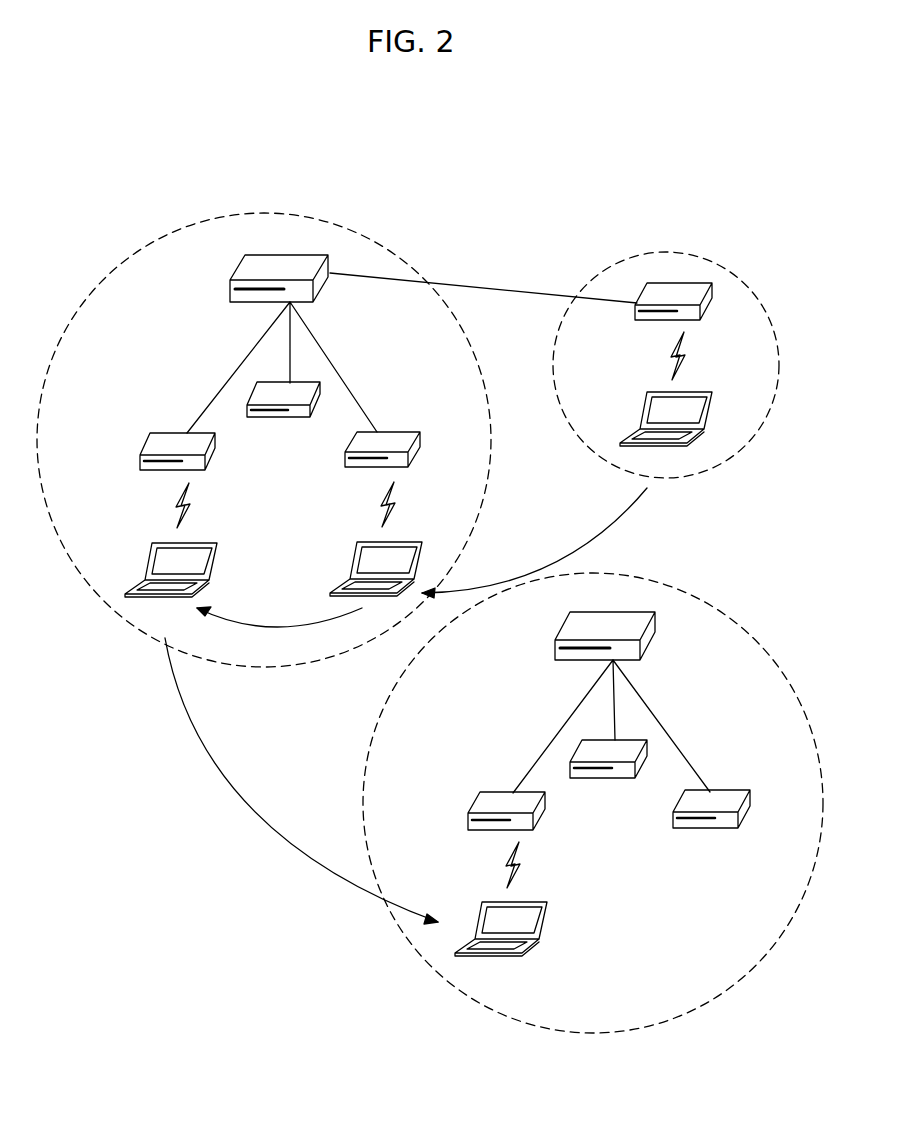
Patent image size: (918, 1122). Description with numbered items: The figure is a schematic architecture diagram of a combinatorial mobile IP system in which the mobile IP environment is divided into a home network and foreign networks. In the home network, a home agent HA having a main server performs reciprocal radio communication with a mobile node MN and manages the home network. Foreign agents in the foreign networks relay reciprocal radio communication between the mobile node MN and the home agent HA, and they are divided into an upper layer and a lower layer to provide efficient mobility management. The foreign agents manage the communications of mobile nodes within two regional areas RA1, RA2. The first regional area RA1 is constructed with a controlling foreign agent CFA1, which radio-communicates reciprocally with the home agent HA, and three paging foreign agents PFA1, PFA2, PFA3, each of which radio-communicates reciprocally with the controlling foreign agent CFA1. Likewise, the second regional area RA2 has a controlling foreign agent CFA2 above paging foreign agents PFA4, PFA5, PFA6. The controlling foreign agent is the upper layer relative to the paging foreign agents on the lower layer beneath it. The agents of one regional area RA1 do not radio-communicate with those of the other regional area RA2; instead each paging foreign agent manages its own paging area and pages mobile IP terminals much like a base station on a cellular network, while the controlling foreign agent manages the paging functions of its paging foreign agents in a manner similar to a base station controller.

The regional area RA1 is at (264, 424).
The regional area RA2 is at (593, 794).
The controlling foreign agent CFA1 is at (306, 288).
The controlling foreign agent CFA2 is at (629, 645).
The paging foreign agent PFA1 is at (406, 462).
The paging foreign agent PFA2 is at (283, 416).
The paging foreign agent PFA3 is at (205, 463).
The paging foreign agent PFA4 is at (530, 822).
The paging foreign agent PFA5 is at (608, 775).
The paging foreign agent PFA6 is at (711, 826).
The home agent HA is at (687, 313).
The mobile node MN is at (418, 658).